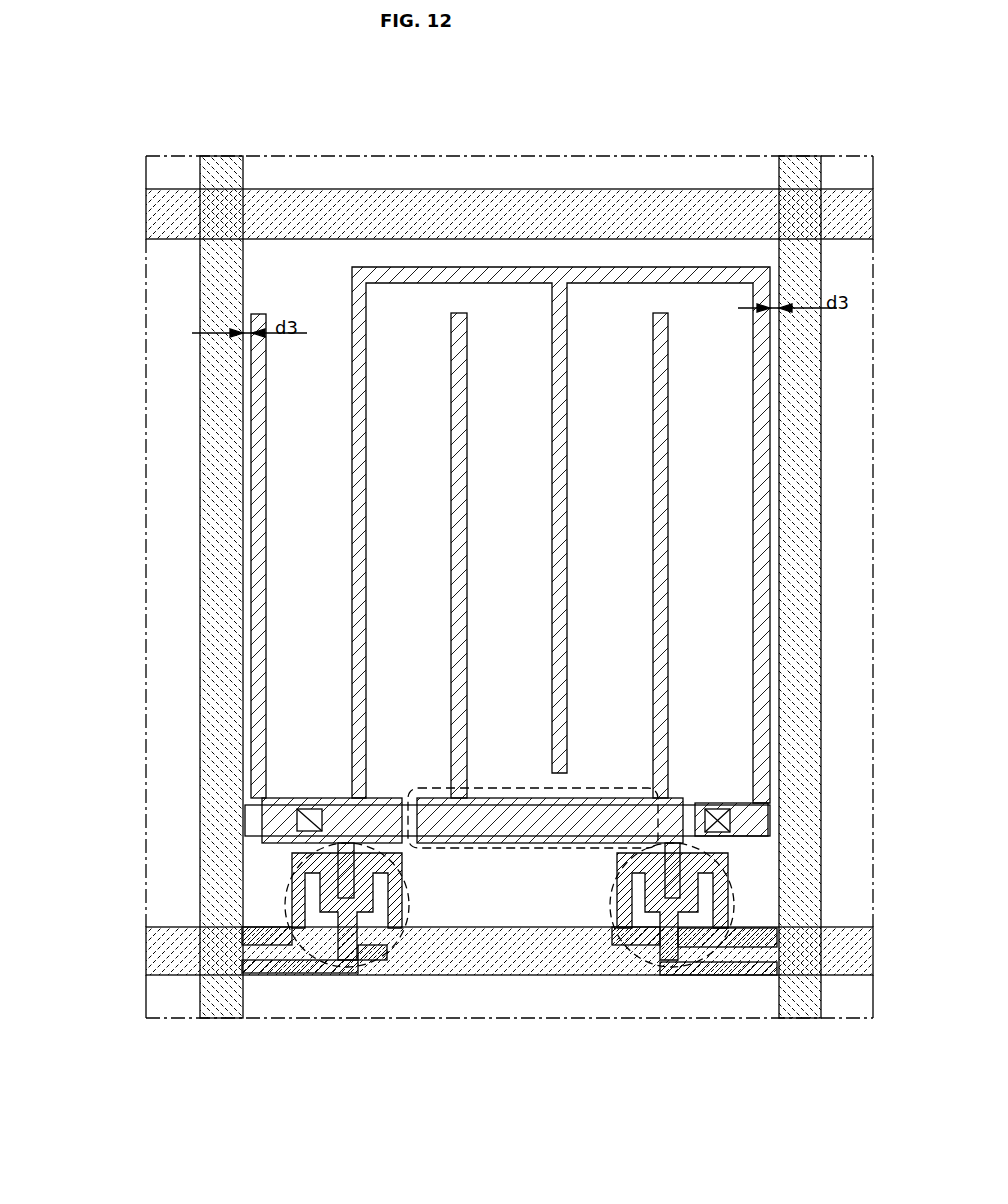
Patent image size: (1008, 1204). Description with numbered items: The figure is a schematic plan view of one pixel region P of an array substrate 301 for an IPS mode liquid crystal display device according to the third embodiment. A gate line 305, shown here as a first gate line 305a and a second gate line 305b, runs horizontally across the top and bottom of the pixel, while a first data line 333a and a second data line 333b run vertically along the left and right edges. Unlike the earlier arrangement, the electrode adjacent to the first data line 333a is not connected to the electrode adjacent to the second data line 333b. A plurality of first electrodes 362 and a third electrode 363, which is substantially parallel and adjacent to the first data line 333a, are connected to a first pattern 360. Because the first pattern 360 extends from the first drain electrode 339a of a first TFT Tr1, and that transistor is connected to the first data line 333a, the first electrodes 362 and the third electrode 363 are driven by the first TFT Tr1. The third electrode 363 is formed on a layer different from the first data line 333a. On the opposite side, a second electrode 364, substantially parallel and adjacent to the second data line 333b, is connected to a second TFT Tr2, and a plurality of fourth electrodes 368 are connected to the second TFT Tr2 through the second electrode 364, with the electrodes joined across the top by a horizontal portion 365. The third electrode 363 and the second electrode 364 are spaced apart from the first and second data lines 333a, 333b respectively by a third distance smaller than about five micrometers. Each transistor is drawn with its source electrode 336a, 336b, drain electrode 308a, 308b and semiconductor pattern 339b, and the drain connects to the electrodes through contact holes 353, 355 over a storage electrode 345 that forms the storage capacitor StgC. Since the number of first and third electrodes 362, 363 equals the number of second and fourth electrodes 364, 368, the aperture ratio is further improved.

The array substrate / pixel region 301 is at (729, 118).
The gate lines 305 is at (57, 592).
The first gate line 305a is at (180, 232).
The second gate line 305b is at (150, 926).
The first data line 333a is at (222, 157).
The second data line 333b is at (800, 157).
The first source electrode 336a is at (287, 929).
The second source electrode 336b is at (617, 976).
The first drain electrode 308a is at (387, 952).
The second drain electrode 308b is at (676, 976).
The first drain electrode 339a is at (340, 957).
The second semiconductor layer 339b is at (735, 976).
The storage electrode 345 is at (603, 845).
The drain contact hole 353 is at (298, 826).
The contact hole 355 is at (716, 808).
The first pattern 360 is at (490, 798).
The first electrodes 362 is at (467, 562).
The third electrode 363 is at (266, 562).
The second electrode 364 is at (755, 442).
The pixel electrode horizontal portion 365 is at (626, 284).
The fourth electrodes 368 is at (366, 442).
The pixel region P is at (733, 590).
The first TFT Tr1 is at (388, 968).
The second TFT Tr2 is at (660, 963).
The storage capacitor StgC is at (492, 849).